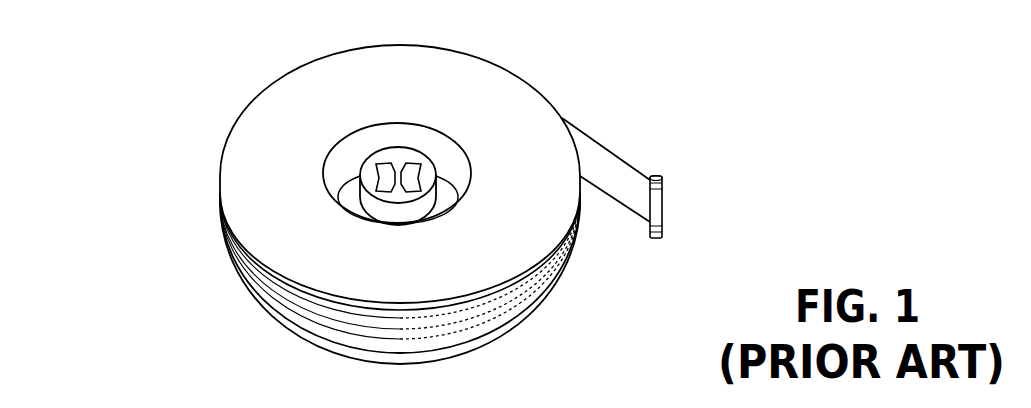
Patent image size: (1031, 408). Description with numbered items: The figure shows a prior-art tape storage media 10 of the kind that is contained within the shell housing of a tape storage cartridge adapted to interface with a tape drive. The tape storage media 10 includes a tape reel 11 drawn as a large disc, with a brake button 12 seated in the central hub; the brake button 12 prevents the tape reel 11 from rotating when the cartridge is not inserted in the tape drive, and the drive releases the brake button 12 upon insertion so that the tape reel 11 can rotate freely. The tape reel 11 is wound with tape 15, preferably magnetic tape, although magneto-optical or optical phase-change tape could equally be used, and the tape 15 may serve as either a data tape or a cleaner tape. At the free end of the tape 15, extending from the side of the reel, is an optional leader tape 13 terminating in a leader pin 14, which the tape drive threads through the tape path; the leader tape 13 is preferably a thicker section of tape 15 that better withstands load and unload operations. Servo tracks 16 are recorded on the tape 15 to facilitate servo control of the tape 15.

The tape storage media 10 is at (530, 36).
The tape reel 11 is at (268, 100).
The brake button 12 is at (405, 150).
The leader tape 13 is at (605, 146).
The leader pin 14 is at (662, 173).
The tape 15 is at (458, 340).
The servo tracks 16 is at (272, 353).